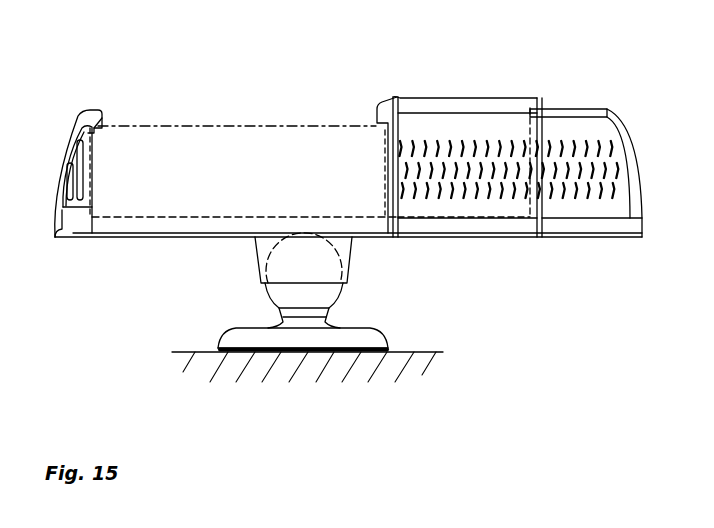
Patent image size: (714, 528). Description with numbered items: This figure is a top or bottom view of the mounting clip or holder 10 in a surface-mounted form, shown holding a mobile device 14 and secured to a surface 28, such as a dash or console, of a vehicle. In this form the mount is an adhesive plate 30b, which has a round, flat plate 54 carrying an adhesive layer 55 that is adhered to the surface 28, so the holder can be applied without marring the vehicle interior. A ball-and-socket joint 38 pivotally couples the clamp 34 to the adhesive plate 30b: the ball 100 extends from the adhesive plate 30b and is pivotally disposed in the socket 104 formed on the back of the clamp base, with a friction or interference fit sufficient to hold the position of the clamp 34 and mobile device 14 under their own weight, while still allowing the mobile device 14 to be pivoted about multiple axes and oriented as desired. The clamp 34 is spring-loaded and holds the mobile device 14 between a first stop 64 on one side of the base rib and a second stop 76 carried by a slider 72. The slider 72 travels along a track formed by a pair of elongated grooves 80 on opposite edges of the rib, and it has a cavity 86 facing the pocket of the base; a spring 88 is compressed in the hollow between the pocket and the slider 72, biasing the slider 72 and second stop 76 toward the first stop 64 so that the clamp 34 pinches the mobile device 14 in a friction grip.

The mounting clip or holder 10 is at (412, 313).
The mobile device 14 is at (218, 128).
The surface 28 is at (398, 362).
The adhesive plate 30b is at (260, 337).
The clamp 34 is at (475, 242).
The ball-and-socket joint 38 is at (352, 280).
The plate 54 is at (352, 337).
The adhesive layer 55 is at (327, 350).
The first stop 64 is at (64, 143).
The slider 72 is at (527, 97).
The second stop 76 is at (380, 163).
The elongated grooves 80 is at (582, 227).
The cavity 86 is at (563, 130).
The spring 88 is at (595, 130).
The ball 100 is at (280, 300).
The socket 104 is at (253, 253).